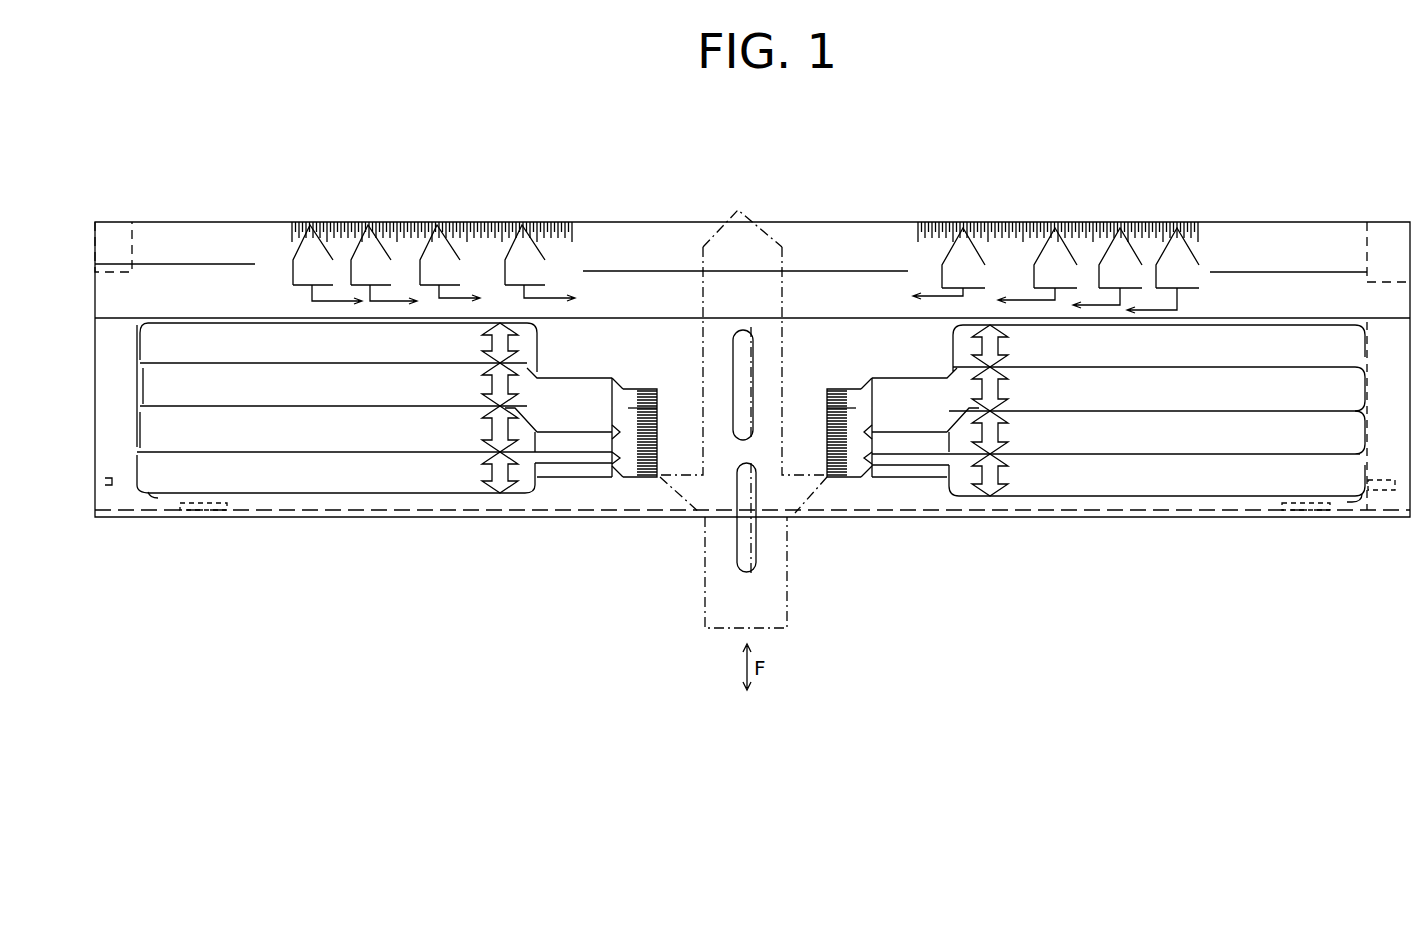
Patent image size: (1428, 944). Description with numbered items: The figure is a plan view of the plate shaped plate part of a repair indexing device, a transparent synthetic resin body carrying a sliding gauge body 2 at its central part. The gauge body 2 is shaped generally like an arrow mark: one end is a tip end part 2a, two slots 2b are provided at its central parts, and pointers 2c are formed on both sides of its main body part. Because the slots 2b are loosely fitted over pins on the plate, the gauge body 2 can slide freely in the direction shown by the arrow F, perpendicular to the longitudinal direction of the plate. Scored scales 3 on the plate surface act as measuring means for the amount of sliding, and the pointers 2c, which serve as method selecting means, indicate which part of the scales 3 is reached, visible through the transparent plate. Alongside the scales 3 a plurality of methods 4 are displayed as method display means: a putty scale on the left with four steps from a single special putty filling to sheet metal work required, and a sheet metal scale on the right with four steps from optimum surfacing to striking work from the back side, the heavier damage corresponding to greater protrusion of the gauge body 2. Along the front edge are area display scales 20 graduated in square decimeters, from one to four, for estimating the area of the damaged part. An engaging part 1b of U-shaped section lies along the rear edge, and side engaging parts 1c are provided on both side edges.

The engaging part 1b is at (1118, 517).
The side engaging part 1c is at (92, 232).
The gauge body 2 is at (702, 293).
The tip end part 2a is at (738, 210).
The slot 2b is at (748, 333).
The pointer 2c is at (662, 478).
The scale 3 is at (657, 423).
The method 4 is at (444, 447).
The area display scale 20 is at (576, 248).